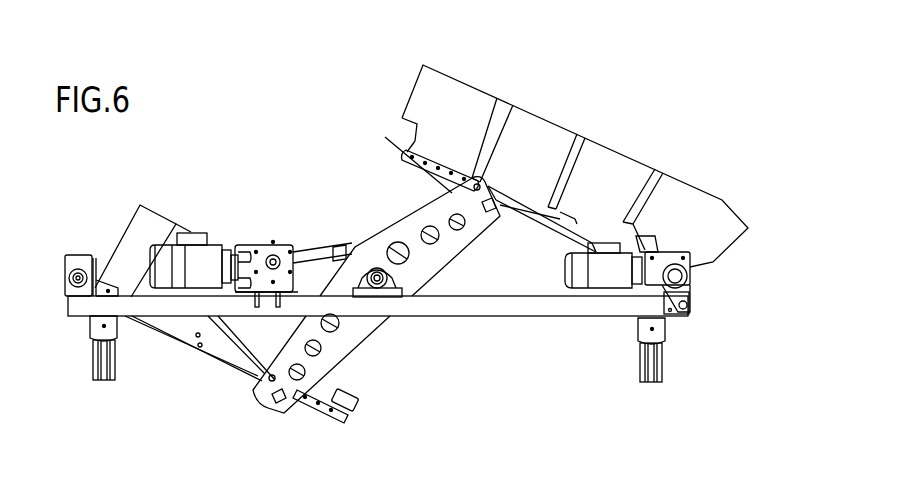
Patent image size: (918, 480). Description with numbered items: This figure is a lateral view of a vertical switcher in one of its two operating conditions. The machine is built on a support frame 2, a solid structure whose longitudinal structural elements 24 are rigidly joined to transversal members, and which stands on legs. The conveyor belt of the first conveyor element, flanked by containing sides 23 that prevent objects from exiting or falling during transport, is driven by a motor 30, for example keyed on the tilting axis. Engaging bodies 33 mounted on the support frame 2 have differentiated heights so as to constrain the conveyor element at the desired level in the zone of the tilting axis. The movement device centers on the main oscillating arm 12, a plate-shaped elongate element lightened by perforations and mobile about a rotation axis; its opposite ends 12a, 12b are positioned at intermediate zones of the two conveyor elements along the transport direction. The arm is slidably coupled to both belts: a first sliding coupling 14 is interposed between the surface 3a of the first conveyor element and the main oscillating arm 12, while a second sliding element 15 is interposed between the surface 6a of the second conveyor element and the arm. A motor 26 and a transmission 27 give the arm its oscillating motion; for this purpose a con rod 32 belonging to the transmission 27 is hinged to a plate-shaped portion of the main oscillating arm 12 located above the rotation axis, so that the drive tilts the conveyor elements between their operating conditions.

The support frame 2 is at (534, 316).
The surface of the first conveyor element 3a is at (250, 378).
The surface of the second conveyor element 6a is at (540, 200).
The main oscillating arm 12 is at (432, 250).
The end of the main oscillating arm 12a is at (290, 389).
The end of the main oscillating arm 12b is at (410, 150).
The first sliding coupling 14 is at (215, 357).
The second sliding element 15 is at (541, 198).
The containing sides 23 is at (600, 170).
The longitudinal structural elements 24 is at (403, 306).
The motor 26 is at (202, 262).
The transmission 27 is at (278, 257).
The motor 30 is at (603, 273).
The con rod 32 is at (315, 252).
The engaging bodies 33 is at (103, 253).